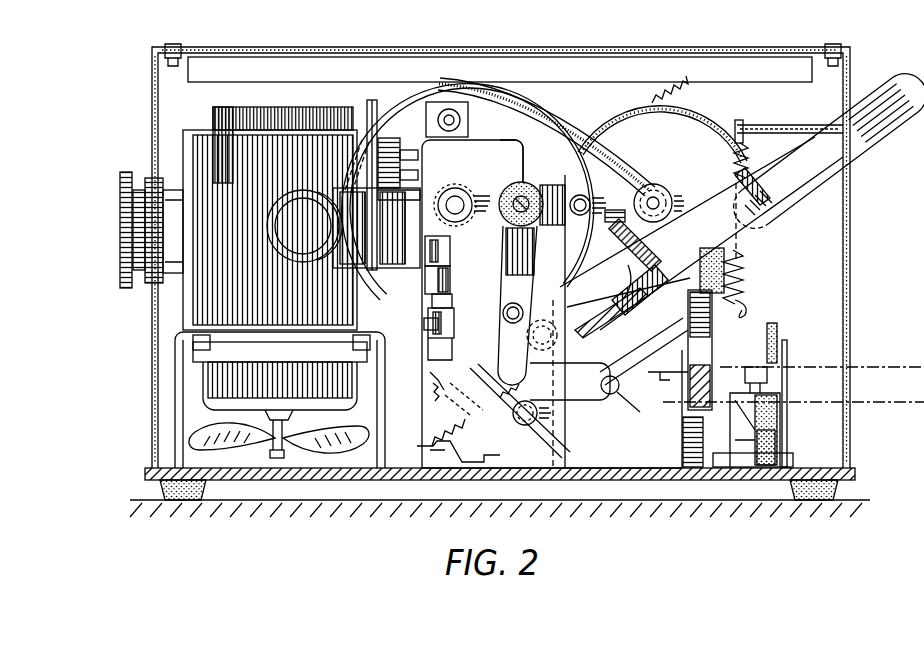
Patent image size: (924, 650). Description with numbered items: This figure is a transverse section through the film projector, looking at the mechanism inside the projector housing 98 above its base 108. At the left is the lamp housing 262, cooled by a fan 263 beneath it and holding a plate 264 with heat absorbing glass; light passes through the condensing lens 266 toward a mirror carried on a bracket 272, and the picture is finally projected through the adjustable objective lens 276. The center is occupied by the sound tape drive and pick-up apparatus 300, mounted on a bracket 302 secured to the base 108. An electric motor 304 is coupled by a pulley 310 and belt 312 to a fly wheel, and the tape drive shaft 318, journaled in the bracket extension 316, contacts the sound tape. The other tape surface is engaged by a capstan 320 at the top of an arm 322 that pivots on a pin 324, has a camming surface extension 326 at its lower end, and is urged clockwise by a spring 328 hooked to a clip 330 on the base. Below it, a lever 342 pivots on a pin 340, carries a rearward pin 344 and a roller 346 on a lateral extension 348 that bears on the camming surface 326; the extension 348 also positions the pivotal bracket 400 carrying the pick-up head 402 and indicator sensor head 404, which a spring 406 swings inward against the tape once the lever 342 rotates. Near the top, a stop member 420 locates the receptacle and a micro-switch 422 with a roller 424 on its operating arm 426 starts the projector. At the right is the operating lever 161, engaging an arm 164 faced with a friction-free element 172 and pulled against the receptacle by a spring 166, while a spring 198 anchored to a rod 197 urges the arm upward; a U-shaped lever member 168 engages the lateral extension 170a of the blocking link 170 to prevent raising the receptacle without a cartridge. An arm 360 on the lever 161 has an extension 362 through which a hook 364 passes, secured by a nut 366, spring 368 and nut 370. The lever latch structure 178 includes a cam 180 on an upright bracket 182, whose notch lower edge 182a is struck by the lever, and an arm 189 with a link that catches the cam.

The projector housing 98 is at (861, 251).
The base 108 is at (623, 455).
The operating lever 161 is at (893, 88).
The arm 164 is at (709, 383).
The spring 166 is at (743, 278).
The U-shaped lever member 168 is at (645, 372).
The blocking link 170 is at (690, 460).
The lateral extension 170a is at (644, 351).
The friction-free element 172 is at (747, 252).
The lever latch structure 178 is at (798, 338).
The cam 180 is at (767, 326).
The upright bracket 182 is at (786, 340).
The lower edge of notch 182a is at (772, 369).
The arm 189 is at (778, 443).
The rod 197 is at (789, 124).
The spring 198 is at (748, 161).
The lamp housing 262 is at (188, 307).
The fan 263 is at (250, 455).
The plate 264 is at (214, 117).
The condensing lens 266 is at (300, 266).
The bracket 272 is at (376, 244).
The objective lens 276 is at (119, 203).
The sound tape drive and pick-up apparatus 300 is at (571, 116).
The bracket 302 is at (420, 425).
The electric motor 304 is at (718, 126).
The pulley 310 is at (664, 191).
The belt 312 is at (606, 140).
The bracket extension 316 is at (508, 165).
The tape drive shaft 318 is at (466, 198).
The capstan 320 is at (530, 183).
The arm 322 is at (454, 300).
The pin 324 is at (521, 316).
The camming surface extension 326 is at (530, 405).
The spring 328 is at (448, 436).
The clip 330 is at (462, 456).
The pin 340 is at (535, 428).
The lever 342 is at (609, 395).
The pin 344 is at (640, 413).
The roller 346 is at (470, 405).
The lateral extension 348 is at (456, 318).
The arm 360 is at (628, 305).
The extension 362 is at (652, 249).
The hook 364 is at (633, 305).
The nut 366 is at (640, 280).
The spring 368 is at (614, 228).
The nut 370 is at (593, 205).
The bracket 400 is at (452, 248).
The pick-up head 402 is at (452, 278).
The indicator sensor head 404 is at (426, 326).
The spring 406 is at (432, 372).
The stop member 420 is at (462, 120).
The micro-switch 422 is at (369, 100).
The roller 424 is at (418, 162).
The operating arm 426 is at (368, 158).